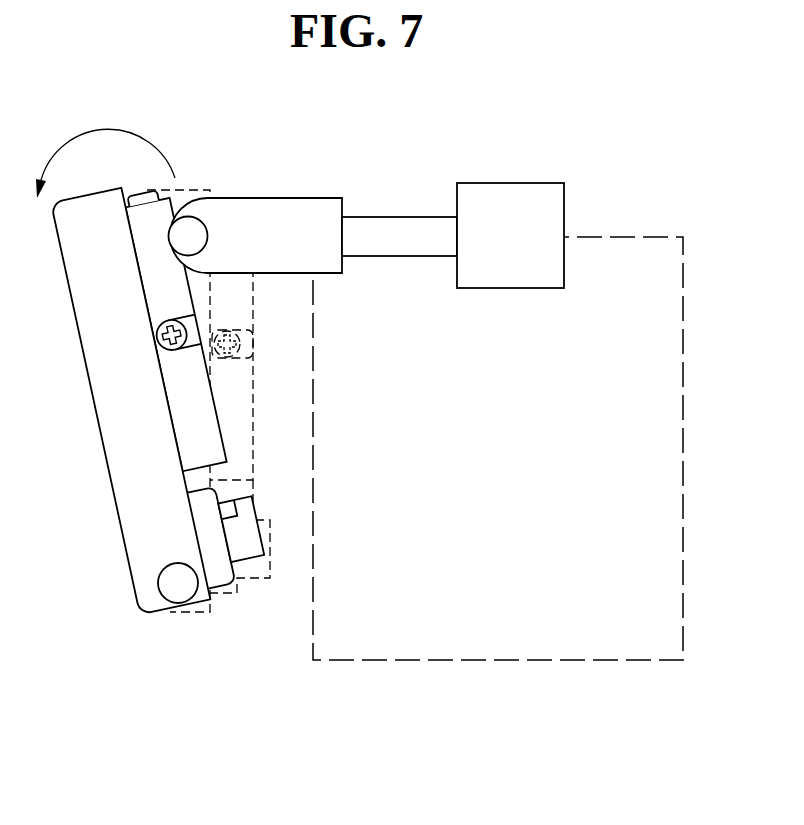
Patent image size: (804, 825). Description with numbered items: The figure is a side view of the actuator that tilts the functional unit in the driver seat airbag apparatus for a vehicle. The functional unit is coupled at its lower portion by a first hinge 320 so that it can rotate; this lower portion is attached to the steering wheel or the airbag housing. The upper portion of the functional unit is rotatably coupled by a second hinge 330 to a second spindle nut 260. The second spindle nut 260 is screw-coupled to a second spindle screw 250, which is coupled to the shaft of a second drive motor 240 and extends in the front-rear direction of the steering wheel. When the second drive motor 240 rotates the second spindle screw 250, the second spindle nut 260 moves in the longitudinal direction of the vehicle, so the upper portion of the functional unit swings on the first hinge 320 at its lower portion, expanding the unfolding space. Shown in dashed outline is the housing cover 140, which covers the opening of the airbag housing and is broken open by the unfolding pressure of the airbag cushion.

The housing cover 140 is at (615, 660).
The second drive motor 240 is at (503, 190).
The second spindle screw 250 is at (391, 225).
The second spindle nut 260 is at (273, 216).
The first hinge 320 is at (177, 587).
The second hinge 330 is at (188, 230).